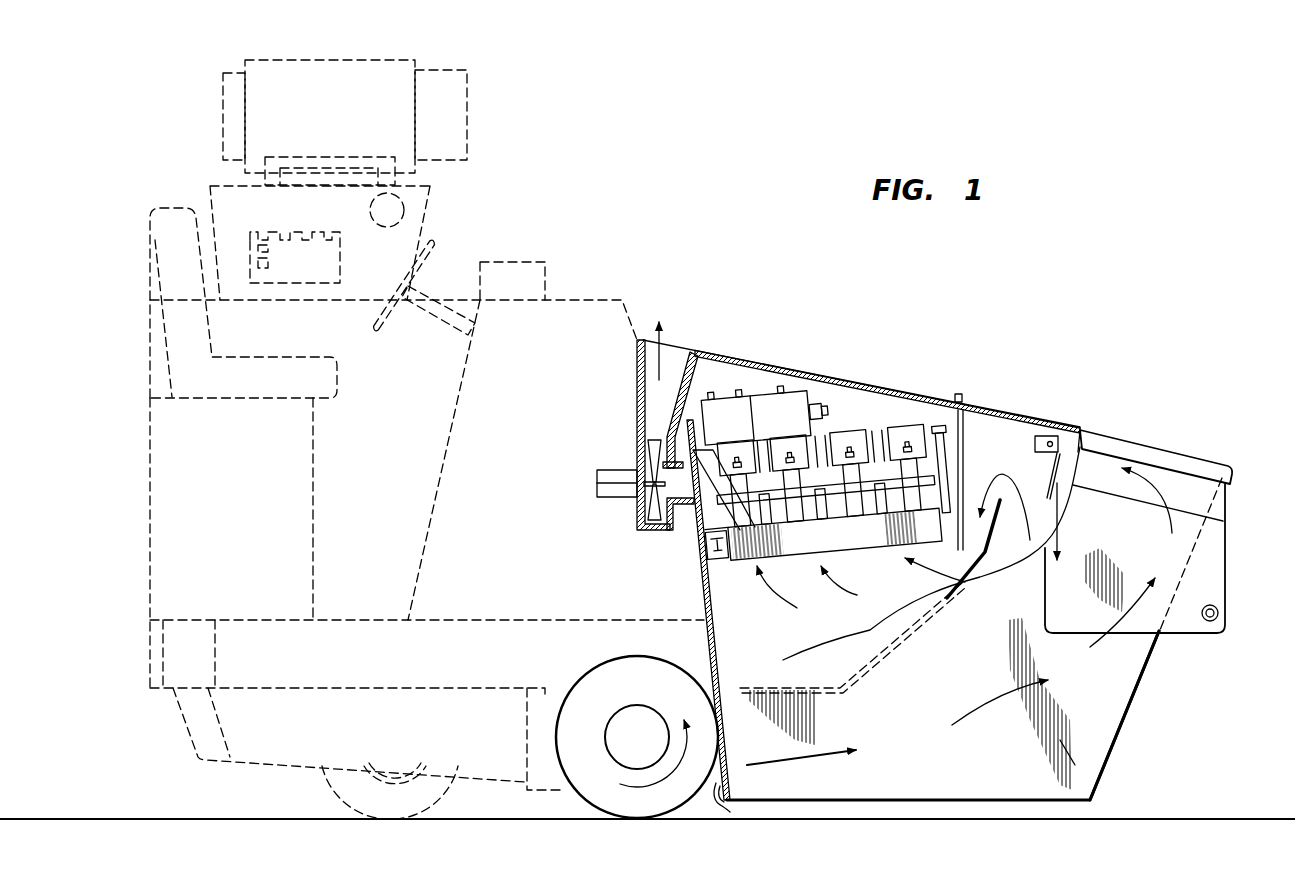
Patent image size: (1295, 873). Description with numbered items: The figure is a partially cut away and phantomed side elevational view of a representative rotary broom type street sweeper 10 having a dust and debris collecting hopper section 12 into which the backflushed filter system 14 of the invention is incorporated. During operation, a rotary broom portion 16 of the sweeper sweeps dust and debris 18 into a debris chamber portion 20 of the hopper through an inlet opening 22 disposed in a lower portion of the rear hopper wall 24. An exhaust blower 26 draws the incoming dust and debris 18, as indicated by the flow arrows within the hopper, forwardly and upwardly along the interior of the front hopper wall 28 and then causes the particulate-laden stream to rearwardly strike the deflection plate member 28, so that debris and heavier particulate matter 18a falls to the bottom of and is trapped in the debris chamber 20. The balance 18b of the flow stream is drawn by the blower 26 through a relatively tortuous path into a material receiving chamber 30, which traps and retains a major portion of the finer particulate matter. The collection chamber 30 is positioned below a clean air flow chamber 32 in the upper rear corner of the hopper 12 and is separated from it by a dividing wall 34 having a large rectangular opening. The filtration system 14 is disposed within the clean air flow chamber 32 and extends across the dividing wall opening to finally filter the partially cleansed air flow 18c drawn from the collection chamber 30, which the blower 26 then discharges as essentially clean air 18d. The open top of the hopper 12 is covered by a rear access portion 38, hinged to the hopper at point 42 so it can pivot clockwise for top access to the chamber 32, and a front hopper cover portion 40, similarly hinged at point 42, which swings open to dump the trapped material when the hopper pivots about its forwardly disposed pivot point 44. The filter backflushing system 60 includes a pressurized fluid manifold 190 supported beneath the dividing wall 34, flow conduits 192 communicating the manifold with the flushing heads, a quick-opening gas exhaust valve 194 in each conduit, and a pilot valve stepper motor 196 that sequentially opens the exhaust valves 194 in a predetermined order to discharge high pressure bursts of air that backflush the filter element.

The rotary broom type street sweeper 10 is at (462, 230).
The dust and debris collecting hopper section 12 is at (1123, 742).
The backflushed filter system 14 is at (834, 454).
The rotary broom portion 16 is at (603, 656).
The dust and debris 18 is at (805, 736).
The debris and heavier particulate matter 18a is at (1058, 514).
The balance of the particulate laden flow stream 18b is at (1010, 447).
The partially cleansed air flow 18c is at (857, 595).
The clean air 18d is at (662, 345).
The debris chamber portion 20 is at (1080, 762).
The inlet opening 22 is at (715, 788).
The rear hopper wall 24 is at (698, 583).
The exhaust blower 26 is at (650, 455).
The deflection plate member 28 is at (1058, 452).
The material receiving chamber 30 is at (742, 637).
The clean air flow chamber 32 is at (862, 414).
The dividing wall 34 is at (698, 530).
The rear access portion 38 is at (768, 367).
The front hopper cover portion 40 is at (1154, 422).
The hinge point 42 is at (962, 398).
The forwardly disposed pivot point 44 is at (1218, 606).
The filter backflushing system 60 is at (824, 402).
The pressurized fluid manifold 190 is at (875, 545).
The flow conduits 192 is at (810, 512).
The quick-opening gas exhaust valve 194 is at (775, 445).
The pilot valve stepper motor 196 is at (742, 398).